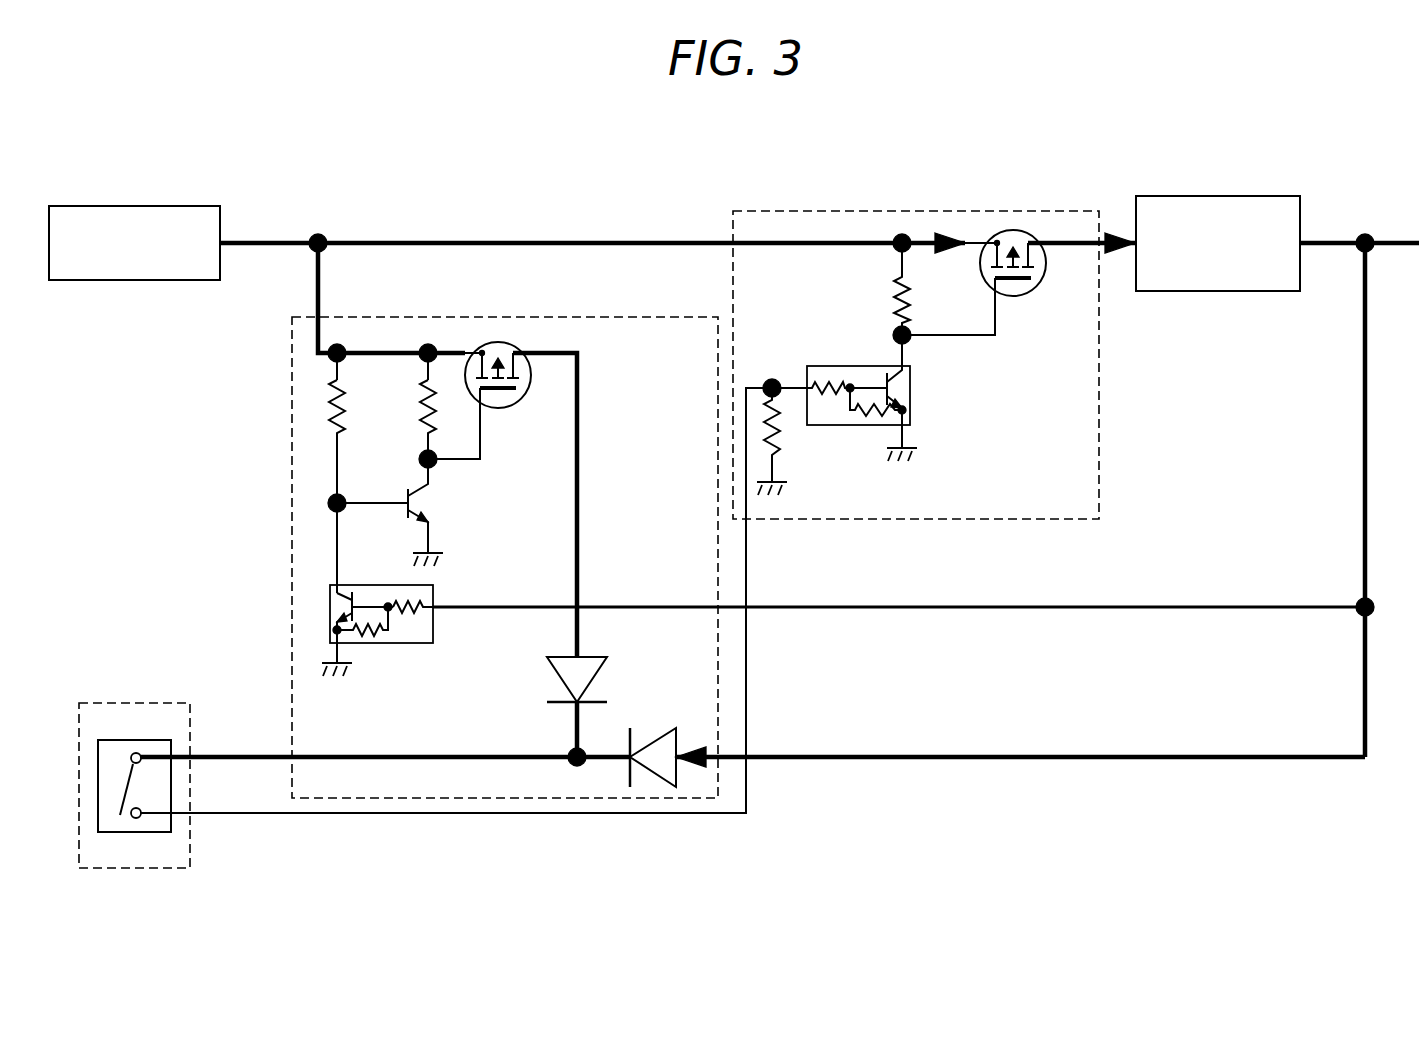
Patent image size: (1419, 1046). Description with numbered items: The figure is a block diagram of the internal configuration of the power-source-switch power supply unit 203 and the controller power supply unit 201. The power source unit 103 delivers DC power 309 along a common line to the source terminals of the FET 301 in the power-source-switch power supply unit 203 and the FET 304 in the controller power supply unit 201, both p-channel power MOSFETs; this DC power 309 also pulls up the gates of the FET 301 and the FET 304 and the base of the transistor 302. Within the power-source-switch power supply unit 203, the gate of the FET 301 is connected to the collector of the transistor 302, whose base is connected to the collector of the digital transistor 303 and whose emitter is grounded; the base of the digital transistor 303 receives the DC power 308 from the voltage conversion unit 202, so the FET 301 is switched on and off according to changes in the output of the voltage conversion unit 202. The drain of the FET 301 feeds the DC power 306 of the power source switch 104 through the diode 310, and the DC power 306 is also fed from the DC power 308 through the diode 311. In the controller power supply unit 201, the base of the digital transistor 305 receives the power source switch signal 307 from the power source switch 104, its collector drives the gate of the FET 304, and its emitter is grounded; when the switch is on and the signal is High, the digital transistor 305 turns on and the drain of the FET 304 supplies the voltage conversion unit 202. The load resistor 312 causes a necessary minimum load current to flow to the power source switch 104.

The power source unit 103 is at (134, 206).
The power source switch 104 is at (136, 702).
The controller power supply unit 201 is at (832, 210).
The voltage conversion unit 202 is at (1218, 292).
The power-source-switch power supply unit 203 is at (407, 316).
The FET 301 is at (514, 397).
The transistor 302 is at (455, 495).
The digital transistor 303 is at (411, 645).
The FET 304 is at (1033, 286).
The digital transistor 305 is at (912, 375).
The DC power 306 is at (243, 755).
The power source switch signal 307 is at (255, 818).
The DC power 308 is at (1330, 241).
The DC power 309 is at (582, 241).
The diode 310 is at (547, 660).
The diode 311 is at (675, 727).
The load resistor 312 is at (788, 450).